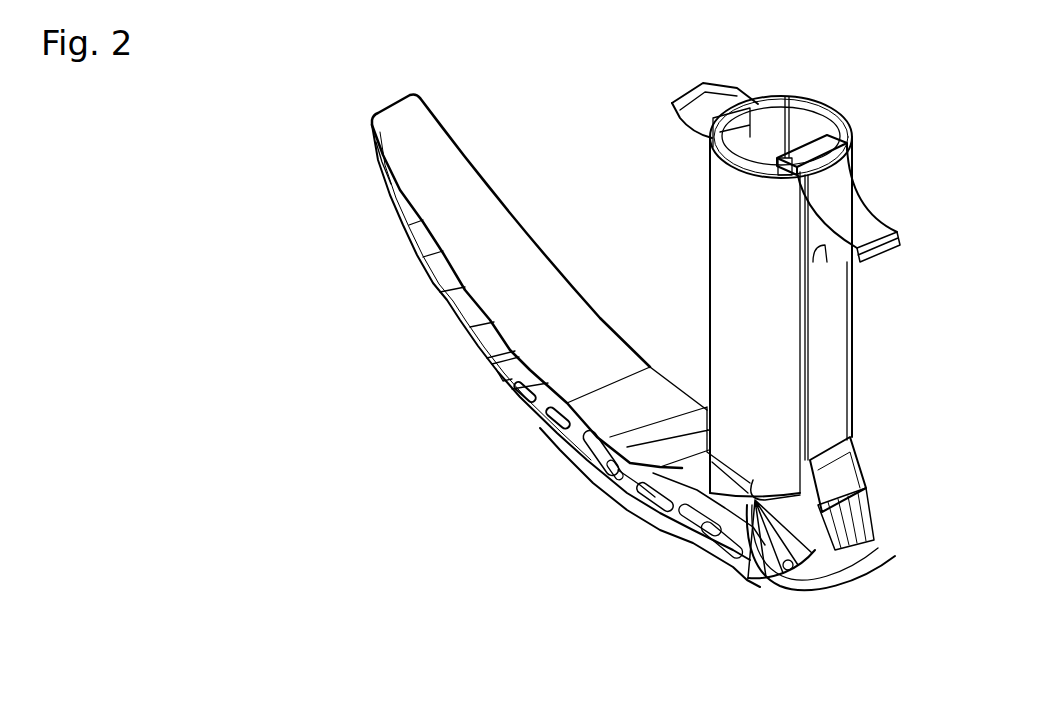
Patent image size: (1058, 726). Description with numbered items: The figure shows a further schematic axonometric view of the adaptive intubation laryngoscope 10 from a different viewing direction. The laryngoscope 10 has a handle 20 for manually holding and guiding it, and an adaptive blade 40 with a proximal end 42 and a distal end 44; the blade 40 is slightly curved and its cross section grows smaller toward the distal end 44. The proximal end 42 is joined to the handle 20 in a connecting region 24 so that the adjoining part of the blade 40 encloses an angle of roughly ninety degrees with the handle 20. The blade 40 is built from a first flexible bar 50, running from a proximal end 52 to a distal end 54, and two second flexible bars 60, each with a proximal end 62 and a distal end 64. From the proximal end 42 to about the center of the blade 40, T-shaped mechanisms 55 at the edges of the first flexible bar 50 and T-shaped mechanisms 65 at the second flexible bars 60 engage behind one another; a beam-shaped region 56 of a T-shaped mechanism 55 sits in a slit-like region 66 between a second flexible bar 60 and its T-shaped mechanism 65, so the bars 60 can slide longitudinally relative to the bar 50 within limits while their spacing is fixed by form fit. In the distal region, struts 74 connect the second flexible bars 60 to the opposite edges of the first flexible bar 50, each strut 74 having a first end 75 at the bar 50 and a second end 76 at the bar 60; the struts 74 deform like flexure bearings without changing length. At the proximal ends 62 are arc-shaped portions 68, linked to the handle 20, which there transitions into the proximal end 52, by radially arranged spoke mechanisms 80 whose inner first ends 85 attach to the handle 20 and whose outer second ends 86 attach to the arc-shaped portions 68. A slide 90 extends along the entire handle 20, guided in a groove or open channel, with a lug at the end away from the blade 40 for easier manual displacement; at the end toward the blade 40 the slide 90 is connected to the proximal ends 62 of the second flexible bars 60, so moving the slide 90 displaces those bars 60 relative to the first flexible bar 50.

The intubation laryngoscope 10 is at (342, 592).
The handle 20 is at (732, 207).
The connecting region 24 is at (753, 500).
The adaptive blade 40 is at (515, 257).
The proximal end of the adaptive blade 42 is at (668, 437).
The distal end of the adaptive blade 44 is at (405, 105).
The first flexible bar 50 is at (500, 260).
The proximal end of the first flexible bar 52 is at (653, 477).
The distal end of the first flexible bar 54 is at (403, 115).
The T-shaped mechanism 55 is at (573, 437).
The beam-shaped region 56 is at (597, 467).
The second flexible bar 60 is at (414, 247).
The proximal end of the second flexible bar 62 is at (863, 537).
The distal end of the second flexible bar 64 is at (382, 158).
The T-shaped mechanism 65 is at (633, 482).
The slit-like region 66 is at (620, 480).
The arc-shaped portion 68 is at (813, 567).
The strut 74 is at (506, 357).
The first end of strut 75 is at (507, 350).
The second end of strut 76 is at (497, 367).
The spoke mechanism 80 is at (780, 573).
The first end of the spoke mechanism 85 is at (777, 540).
The second end of the spoke mechanism 86 is at (777, 577).
The slide 90 is at (830, 388).